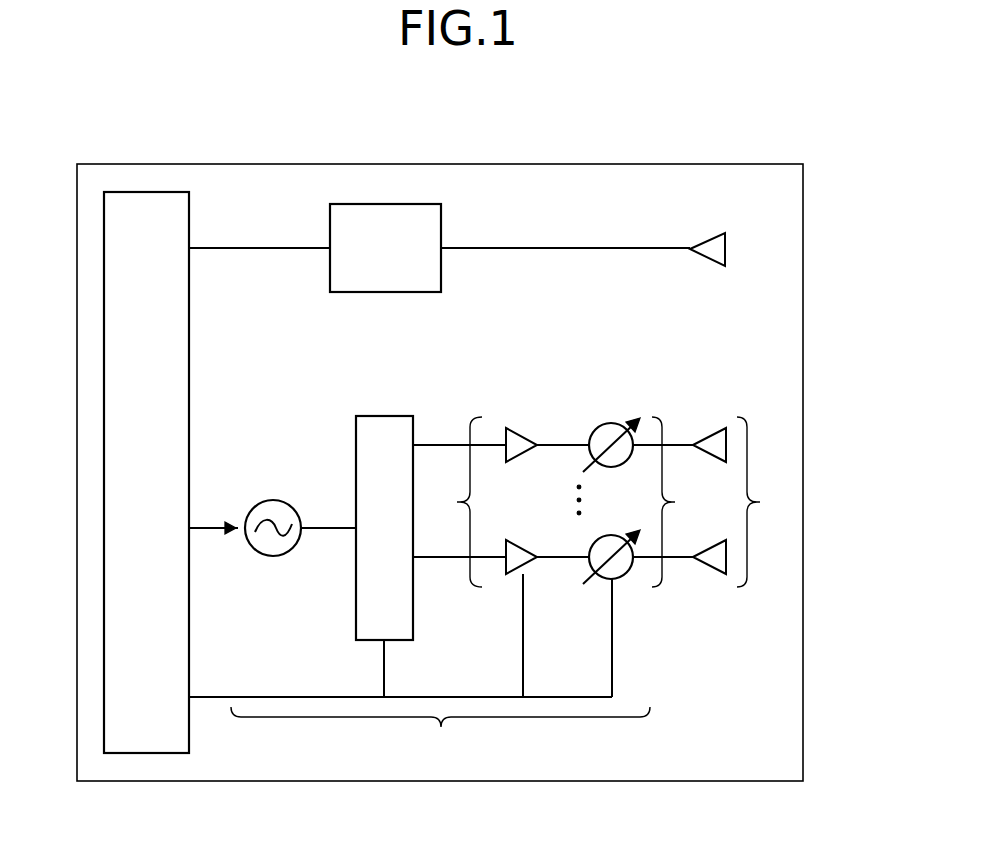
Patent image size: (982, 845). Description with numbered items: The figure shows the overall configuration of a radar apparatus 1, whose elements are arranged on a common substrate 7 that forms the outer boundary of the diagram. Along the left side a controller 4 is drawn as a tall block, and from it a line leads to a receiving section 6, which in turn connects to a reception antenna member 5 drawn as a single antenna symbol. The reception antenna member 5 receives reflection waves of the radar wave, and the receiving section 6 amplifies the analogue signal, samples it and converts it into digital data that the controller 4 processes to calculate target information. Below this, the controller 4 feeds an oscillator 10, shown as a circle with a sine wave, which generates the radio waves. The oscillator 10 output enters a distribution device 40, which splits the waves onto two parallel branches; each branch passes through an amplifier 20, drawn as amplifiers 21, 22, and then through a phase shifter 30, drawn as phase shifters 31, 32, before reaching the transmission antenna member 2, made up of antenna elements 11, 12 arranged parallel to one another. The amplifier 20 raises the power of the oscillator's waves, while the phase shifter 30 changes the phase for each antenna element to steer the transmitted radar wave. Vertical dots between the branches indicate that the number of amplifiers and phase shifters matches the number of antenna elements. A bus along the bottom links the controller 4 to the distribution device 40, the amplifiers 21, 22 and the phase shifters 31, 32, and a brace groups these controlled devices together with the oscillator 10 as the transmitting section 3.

The radar apparatus 1 is at (493, 108).
The transmission antenna member 2 is at (737, 504).
The transmitting section 3 is at (419, 664).
The controller 4 is at (148, 192).
The reception antenna member 5 is at (709, 237).
The receiving section 6 is at (382, 204).
The substrate 7 is at (788, 739).
The oscillator 10 is at (273, 500).
The antenna element 11 is at (707, 567).
The antenna element 12 is at (699, 437).
The amplifier 20 is at (488, 501).
The amplifier 21 is at (529, 572).
The amplifier 22 is at (504, 428).
The phase shifter 30 is at (645, 509).
The phase shifter 31 is at (617, 578).
The phase shifter 32 is at (620, 423).
The distribution device 40 is at (388, 416).